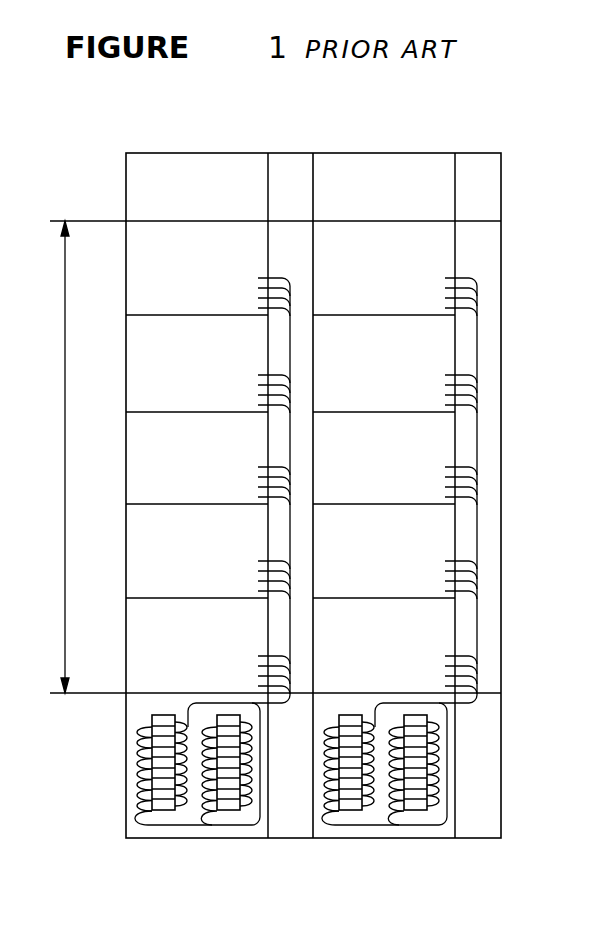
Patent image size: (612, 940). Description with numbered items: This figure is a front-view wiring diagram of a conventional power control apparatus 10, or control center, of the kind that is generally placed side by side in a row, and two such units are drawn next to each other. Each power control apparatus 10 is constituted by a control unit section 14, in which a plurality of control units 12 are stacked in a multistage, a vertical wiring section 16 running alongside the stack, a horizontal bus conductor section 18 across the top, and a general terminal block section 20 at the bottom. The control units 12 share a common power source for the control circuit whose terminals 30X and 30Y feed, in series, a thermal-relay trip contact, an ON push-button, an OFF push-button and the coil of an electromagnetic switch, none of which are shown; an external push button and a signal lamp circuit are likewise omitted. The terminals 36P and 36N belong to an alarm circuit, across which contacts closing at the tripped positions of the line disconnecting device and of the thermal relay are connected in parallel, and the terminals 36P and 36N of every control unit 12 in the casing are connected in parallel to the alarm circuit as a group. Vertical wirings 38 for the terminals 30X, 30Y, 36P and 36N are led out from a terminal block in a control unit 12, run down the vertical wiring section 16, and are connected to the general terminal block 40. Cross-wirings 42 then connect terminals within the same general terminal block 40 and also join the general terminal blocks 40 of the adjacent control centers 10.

The power control apparatus 10 is at (225, 846).
The control unit 12 is at (136, 440).
The control unit section 14 is at (81, 455).
The vertical wiring section 16 is at (309, 227).
The horizontal bus conductor section 18 is at (217, 202).
The general terminal block section 20 is at (133, 771).
The terminal of power source for control circuit 30X is at (259, 375).
The terminal of power source for control circuit 30Y is at (259, 385).
The terminal of alarm circuit 36P is at (259, 395).
The terminal of alarm circuit 36N is at (259, 405).
The vertical wiring 38 is at (278, 704).
The general terminal block 40 is at (161, 715).
The cross-wiring 42 is at (136, 825).